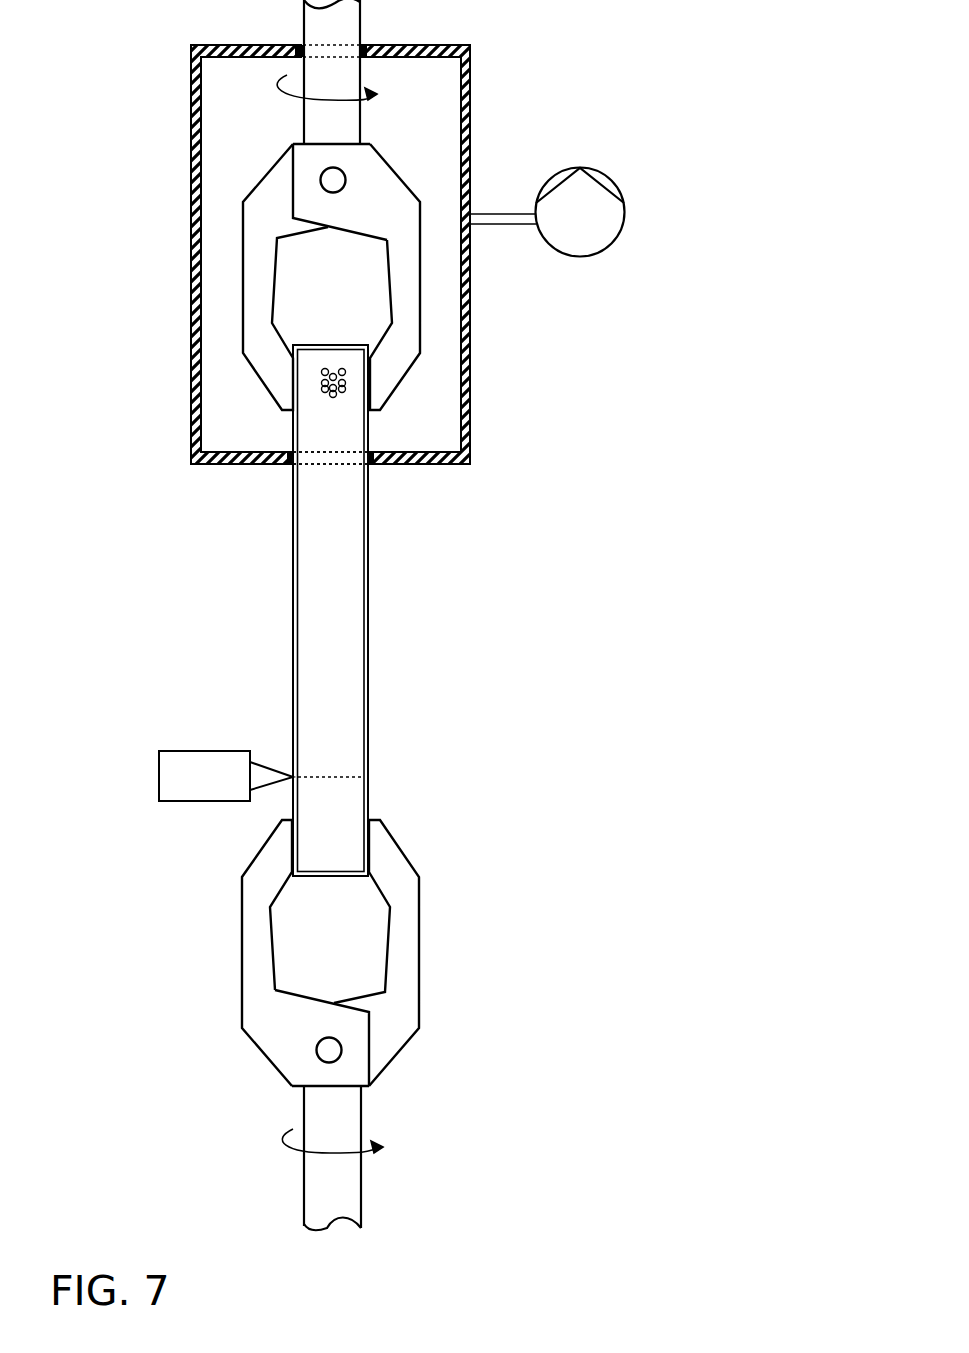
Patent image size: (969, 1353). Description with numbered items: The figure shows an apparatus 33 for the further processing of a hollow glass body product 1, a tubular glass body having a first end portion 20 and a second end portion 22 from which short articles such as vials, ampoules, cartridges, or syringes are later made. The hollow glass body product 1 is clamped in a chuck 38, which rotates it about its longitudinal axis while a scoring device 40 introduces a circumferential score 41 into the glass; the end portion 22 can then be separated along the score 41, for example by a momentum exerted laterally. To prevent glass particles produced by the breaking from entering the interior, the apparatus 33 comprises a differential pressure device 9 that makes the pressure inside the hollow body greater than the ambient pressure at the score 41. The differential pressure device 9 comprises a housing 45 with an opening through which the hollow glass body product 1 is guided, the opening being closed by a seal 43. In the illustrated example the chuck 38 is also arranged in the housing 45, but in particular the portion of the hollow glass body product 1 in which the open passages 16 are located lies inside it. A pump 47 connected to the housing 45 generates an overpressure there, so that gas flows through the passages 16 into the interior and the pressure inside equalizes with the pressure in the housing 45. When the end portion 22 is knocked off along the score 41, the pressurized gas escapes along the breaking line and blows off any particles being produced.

The hollow glass body product 1 is at (332, 610).
The differential pressure device 9 is at (626, 220).
The open passages 16 is at (344, 391).
The first end portion 20 is at (293, 418).
The second end portion 22 is at (370, 810).
The apparatus 33 is at (592, 1003).
The chuck 38 is at (242, 320).
The scoring device 40 is at (220, 802).
The score 41 is at (347, 777).
The seal 43 is at (370, 465).
The housing 45 is at (193, 404).
The pump 47 is at (612, 245).